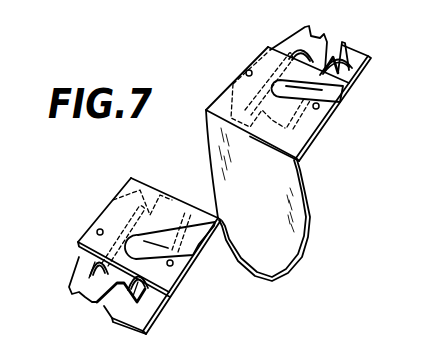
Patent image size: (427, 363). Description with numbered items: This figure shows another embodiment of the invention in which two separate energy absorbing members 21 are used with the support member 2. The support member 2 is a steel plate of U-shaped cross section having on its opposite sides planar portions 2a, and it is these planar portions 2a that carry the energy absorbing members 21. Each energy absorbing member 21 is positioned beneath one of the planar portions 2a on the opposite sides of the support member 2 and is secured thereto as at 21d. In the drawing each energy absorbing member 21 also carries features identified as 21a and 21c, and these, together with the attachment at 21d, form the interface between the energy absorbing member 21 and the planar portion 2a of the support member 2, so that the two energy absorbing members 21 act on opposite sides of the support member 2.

The support member 2 is at (314, 236).
The planar portions 2a is at (260, 60).
The energy absorbing members 21 is at (368, 58).
The arched loops of clip 21a is at (348, 50).
The hole in clip 21c is at (318, 109).
The securing point 21d is at (246, 72).